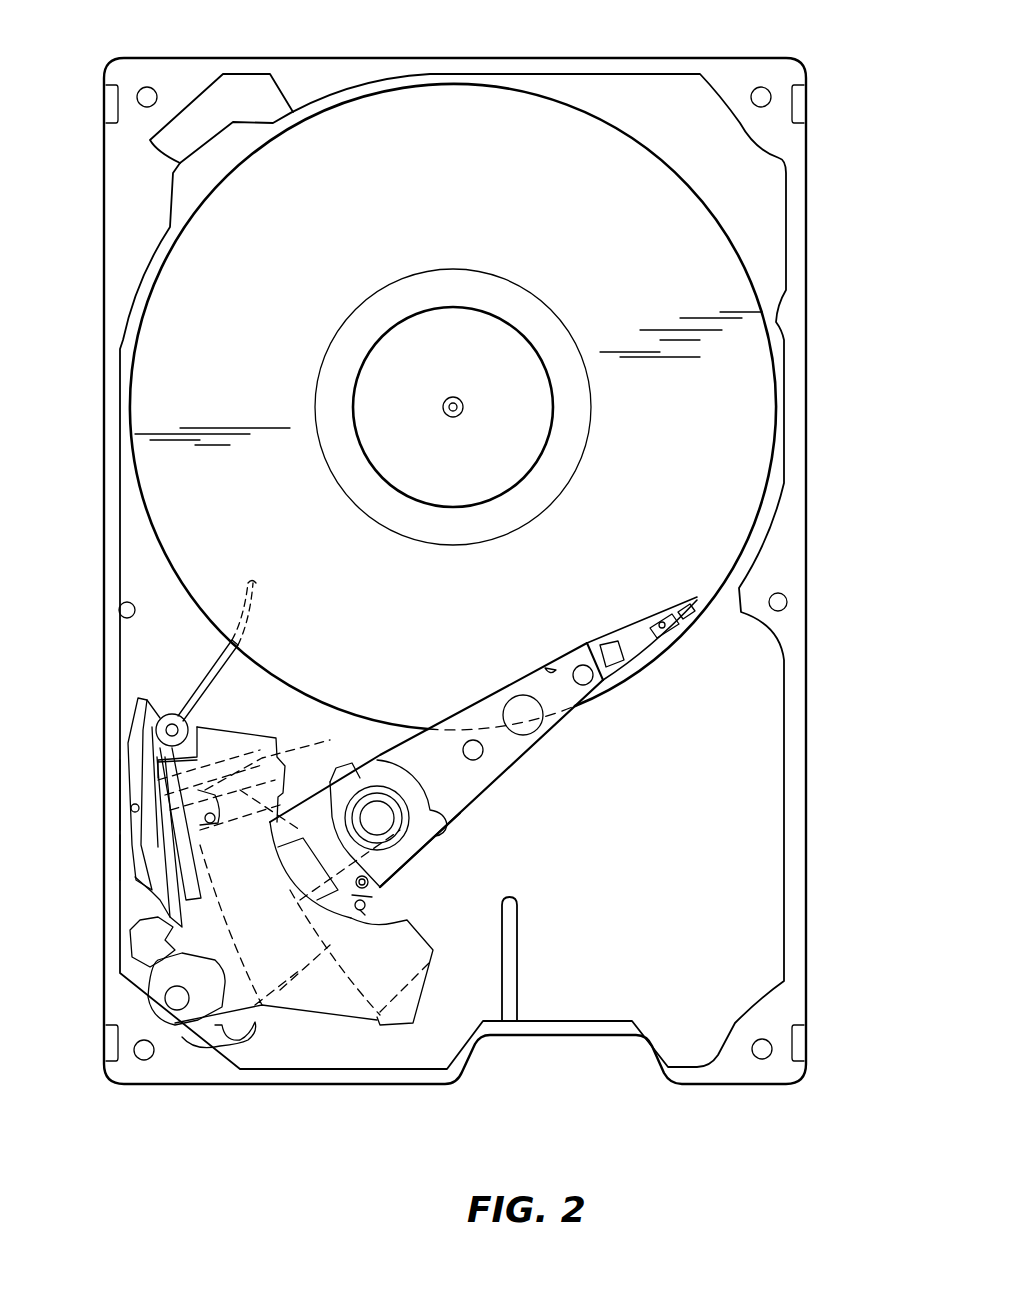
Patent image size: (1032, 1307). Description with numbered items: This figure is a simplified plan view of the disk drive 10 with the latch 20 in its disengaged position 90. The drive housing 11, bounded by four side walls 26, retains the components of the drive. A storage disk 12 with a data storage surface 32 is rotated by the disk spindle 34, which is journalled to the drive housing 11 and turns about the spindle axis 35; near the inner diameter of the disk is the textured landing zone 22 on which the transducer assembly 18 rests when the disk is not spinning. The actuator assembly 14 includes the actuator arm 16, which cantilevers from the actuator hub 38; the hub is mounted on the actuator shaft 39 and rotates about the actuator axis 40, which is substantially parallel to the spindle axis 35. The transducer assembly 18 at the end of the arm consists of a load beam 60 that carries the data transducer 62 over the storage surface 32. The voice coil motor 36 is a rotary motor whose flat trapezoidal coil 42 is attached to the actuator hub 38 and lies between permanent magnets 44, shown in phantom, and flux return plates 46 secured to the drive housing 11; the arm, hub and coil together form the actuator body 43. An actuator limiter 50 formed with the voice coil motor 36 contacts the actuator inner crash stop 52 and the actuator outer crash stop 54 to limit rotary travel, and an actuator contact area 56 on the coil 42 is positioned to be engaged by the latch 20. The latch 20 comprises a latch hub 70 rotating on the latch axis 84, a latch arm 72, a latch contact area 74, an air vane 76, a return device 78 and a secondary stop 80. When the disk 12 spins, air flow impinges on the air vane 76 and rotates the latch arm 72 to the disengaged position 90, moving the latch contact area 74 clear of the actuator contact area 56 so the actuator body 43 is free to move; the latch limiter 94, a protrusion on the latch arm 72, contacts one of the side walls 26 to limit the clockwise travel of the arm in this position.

The disk drive 10 is at (838, 490).
The drive housing 11 is at (810, 838).
The storage disk 12 is at (741, 250).
The actuator assembly 14 is at (292, 1020).
The actuator arm 16 is at (510, 752).
The transducer assembly 18 is at (694, 608).
The latch 20 is at (125, 882).
The landing zone 22 is at (580, 425).
The side walls 26 is at (420, 68).
The data storage surface 32 is at (555, 130).
The disk spindle 34 is at (445, 408).
The spindle axis 35 is at (460, 403).
The voice coil motor 36 is at (350, 1037).
The actuator hub 38 is at (433, 827).
The actuator shaft 39 is at (467, 807).
The actuator axis 40 is at (378, 815).
The coil 42 is at (373, 897).
The actuator body 43 is at (423, 856).
The permanent magnets 44 is at (284, 795).
The flux return plates 46 is at (235, 748).
The actuator limiter 50 is at (120, 977).
The actuator inner crash stop 52 is at (236, 1050).
The actuator outer crash stop 54 is at (133, 936).
The actuator contact area 56 is at (132, 795).
The load beam 60 is at (662, 612).
The data transducer 62 is at (683, 600).
The latch hub 70 is at (156, 730).
The latch arm 72 is at (124, 758).
The latch contact area 74 is at (152, 896).
The air vane 76 is at (243, 662).
The return device 78 is at (285, 752).
The secondary stop 80 is at (112, 827).
The latch axis 84 is at (195, 712).
The disengaged position 90 is at (124, 860).
The latch limiter 94 is at (130, 808).